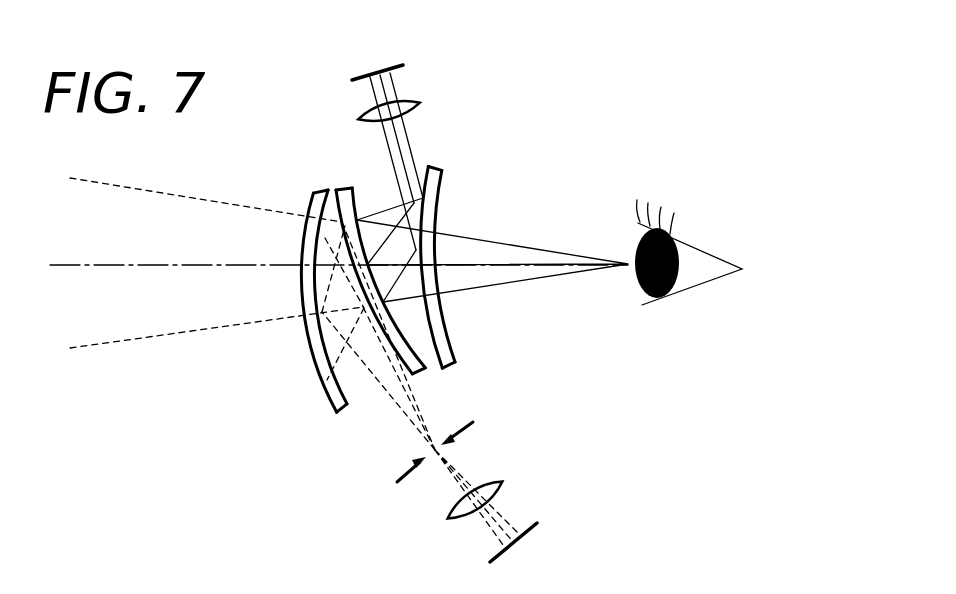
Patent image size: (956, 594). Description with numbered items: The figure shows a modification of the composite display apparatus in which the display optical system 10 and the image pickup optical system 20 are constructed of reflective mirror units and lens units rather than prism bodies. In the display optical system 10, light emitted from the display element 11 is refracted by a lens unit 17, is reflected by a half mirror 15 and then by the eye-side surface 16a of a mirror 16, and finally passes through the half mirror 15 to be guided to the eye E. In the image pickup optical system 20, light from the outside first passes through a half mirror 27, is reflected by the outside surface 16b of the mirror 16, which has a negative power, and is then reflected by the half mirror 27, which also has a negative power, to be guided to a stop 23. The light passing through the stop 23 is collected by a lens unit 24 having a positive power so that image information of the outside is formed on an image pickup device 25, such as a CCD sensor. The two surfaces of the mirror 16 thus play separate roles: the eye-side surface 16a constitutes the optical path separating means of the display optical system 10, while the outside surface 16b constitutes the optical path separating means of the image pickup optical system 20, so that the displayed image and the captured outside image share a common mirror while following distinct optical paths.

The display optical system 10 is at (476, 116).
The display element 11 is at (385, 72).
The half mirror 15 is at (436, 182).
The mirror 16 is at (454, 301).
The eye-side surface 16a is at (404, 342).
The outside surface 16b is at (412, 374).
The lens unit 17 is at (408, 104).
The image pickup optical system 20 is at (337, 487).
The stop 23 is at (400, 484).
The lens unit 24 is at (497, 481).
The image pickup device 25 is at (523, 537).
The half mirror 27 is at (313, 358).
The eye E is at (698, 287).